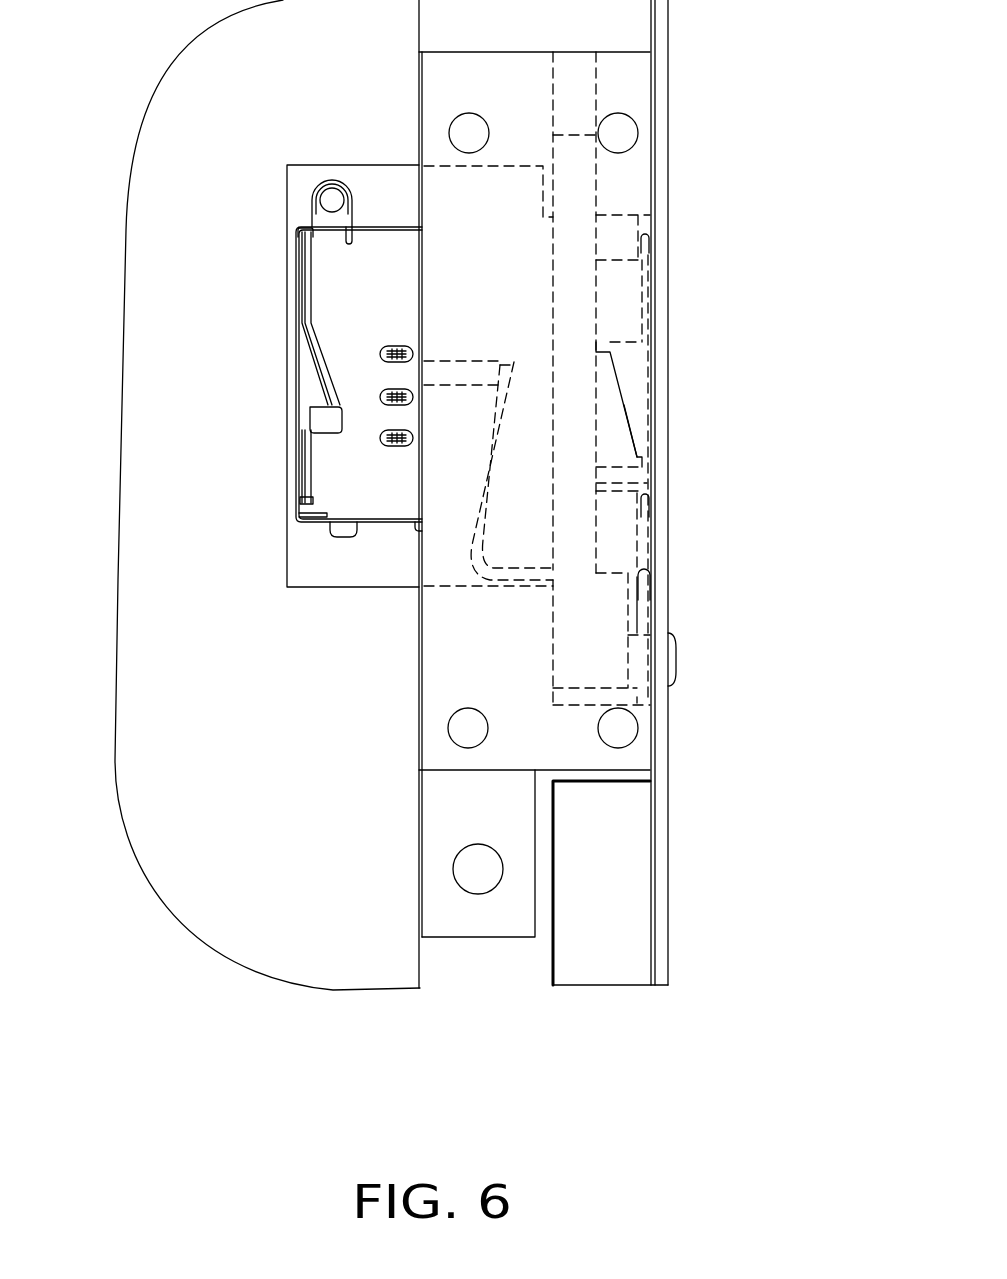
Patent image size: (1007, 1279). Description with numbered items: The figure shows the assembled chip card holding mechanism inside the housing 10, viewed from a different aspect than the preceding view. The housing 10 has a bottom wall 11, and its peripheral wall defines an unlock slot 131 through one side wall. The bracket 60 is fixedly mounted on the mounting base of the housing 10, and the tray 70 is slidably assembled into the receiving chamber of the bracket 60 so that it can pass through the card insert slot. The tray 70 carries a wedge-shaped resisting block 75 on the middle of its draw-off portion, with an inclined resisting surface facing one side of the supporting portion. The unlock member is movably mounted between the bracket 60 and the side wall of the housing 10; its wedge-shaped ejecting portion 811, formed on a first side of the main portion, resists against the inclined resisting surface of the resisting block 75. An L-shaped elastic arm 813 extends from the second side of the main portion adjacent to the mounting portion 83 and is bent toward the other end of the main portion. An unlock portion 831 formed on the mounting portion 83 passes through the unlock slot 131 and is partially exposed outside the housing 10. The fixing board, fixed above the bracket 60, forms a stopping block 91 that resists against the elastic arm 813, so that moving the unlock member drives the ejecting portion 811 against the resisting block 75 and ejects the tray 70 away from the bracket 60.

The housing 10 is at (662, 830).
The bottom wall 11 is at (153, 562).
The bracket 60 is at (338, 472).
The tray 70 is at (617, 303).
The resisting block 75 is at (628, 378).
The ejecting portion 811 is at (617, 440).
The elastic arm 813 is at (480, 500).
The mounting portion 83 is at (603, 658).
The unlock portion 831 is at (674, 652).
The unlock slot 131 is at (643, 588).
The stopping block 91 is at (460, 372).